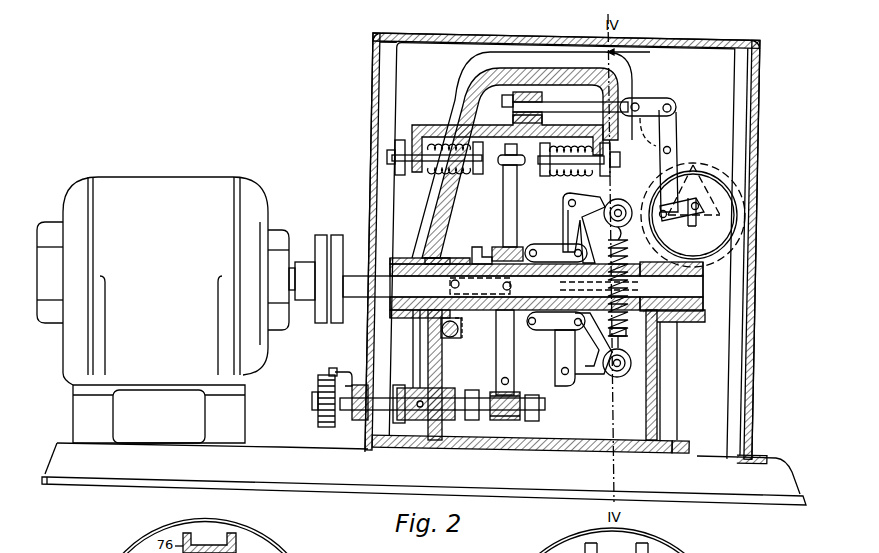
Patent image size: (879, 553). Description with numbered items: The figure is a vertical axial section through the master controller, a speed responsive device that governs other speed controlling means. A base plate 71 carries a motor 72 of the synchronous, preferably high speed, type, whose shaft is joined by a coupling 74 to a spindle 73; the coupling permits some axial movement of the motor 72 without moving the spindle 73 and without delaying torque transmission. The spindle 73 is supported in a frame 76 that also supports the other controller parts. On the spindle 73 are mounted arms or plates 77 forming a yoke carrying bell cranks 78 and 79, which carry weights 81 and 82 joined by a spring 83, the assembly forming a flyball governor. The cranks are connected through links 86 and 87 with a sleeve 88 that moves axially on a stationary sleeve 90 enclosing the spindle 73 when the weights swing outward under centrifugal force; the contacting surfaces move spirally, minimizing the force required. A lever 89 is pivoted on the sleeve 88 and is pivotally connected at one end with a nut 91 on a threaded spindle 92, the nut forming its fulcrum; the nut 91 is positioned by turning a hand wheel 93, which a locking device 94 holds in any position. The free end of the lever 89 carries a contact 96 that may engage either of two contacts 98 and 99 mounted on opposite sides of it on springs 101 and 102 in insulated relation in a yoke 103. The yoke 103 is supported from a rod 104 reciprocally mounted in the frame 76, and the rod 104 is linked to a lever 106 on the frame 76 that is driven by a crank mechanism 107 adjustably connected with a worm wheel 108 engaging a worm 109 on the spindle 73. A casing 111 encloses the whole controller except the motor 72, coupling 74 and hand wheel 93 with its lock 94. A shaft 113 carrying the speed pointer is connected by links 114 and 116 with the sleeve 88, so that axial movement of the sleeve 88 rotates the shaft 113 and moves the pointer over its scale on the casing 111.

The base plate 71 is at (280, 447).
The motor 72 is at (163, 178).
The spindle 73 is at (366, 296).
The coupling 74 is at (322, 236).
The frame 76 is at (472, 76).
The arms or plates 77 is at (558, 342).
The bell crank 78 is at (566, 208).
The bell crank 79 is at (590, 374).
The weight 81 is at (620, 198).
The weight 82 is at (620, 378).
The spring 83 is at (624, 328).
The link 86 is at (548, 250).
The link 87 is at (538, 326).
The sleeve 88 is at (484, 248).
The lever 89 is at (504, 215).
The stationary sleeve 90 is at (420, 312).
The nut 91 is at (510, 420).
The threaded spindle 92 is at (392, 395).
The hand wheel 93 is at (330, 423).
The locking device 94 is at (346, 372).
The contact 96 is at (500, 172).
The contact 98 is at (474, 165).
The contact 99 is at (545, 166).
The spring 101 is at (432, 168).
The spring 102 is at (596, 166).
The yoke 103 is at (415, 123).
The rod 104 is at (615, 105).
The lever 106 is at (680, 134).
The crank mechanism 107 is at (680, 218).
The worm wheel 108 is at (707, 165).
The worm 109 is at (697, 316).
The casing 111 is at (756, 197).
The shaft 113 is at (452, 336).
The link 114 is at (463, 322).
The link 116 is at (473, 254).